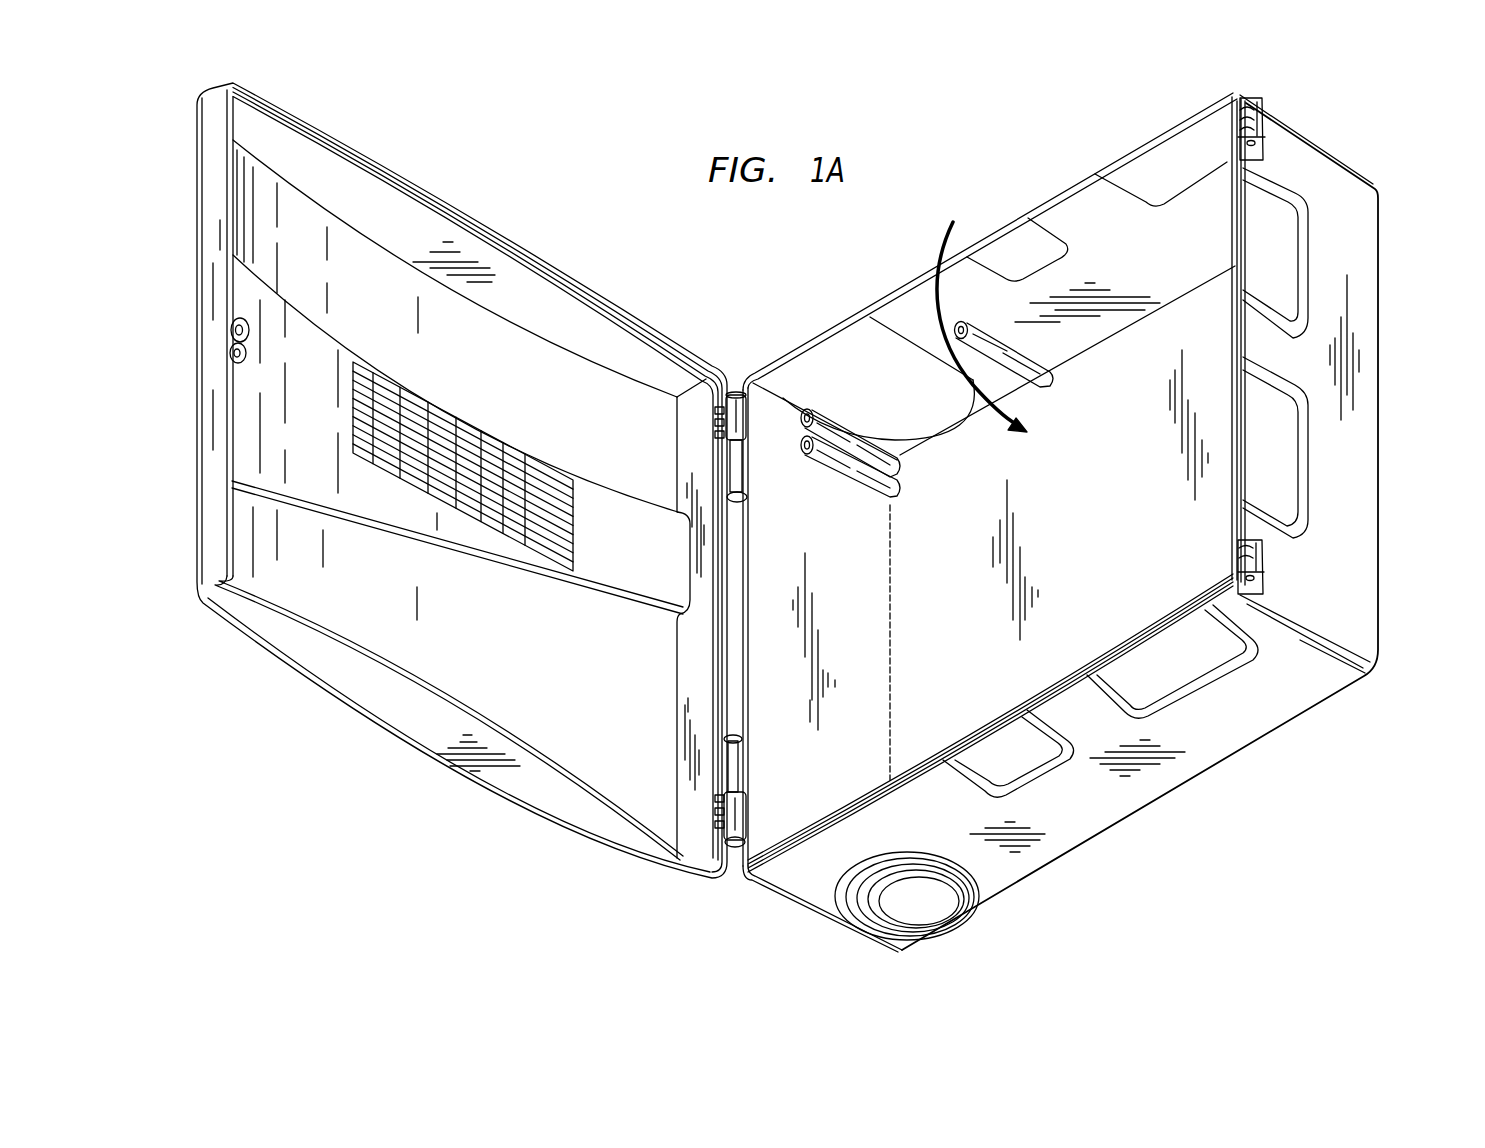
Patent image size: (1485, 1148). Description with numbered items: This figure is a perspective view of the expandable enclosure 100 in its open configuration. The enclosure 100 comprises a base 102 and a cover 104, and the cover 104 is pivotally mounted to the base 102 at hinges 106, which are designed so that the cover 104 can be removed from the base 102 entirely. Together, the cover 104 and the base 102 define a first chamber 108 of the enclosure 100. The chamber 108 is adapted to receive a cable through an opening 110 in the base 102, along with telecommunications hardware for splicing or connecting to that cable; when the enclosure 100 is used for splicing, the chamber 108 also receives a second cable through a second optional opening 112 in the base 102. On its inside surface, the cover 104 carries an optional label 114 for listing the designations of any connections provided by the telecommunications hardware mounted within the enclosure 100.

The expandable enclosure 100 is at (1112, 135).
The base 102 is at (1380, 372).
The cover 104 is at (445, 203).
The hinges 106 is at (737, 392).
The first chamber 108 is at (982, 312).
The opening 110 is at (918, 908).
The second optional opening 112 is at (855, 368).
The label 114 is at (573, 531).